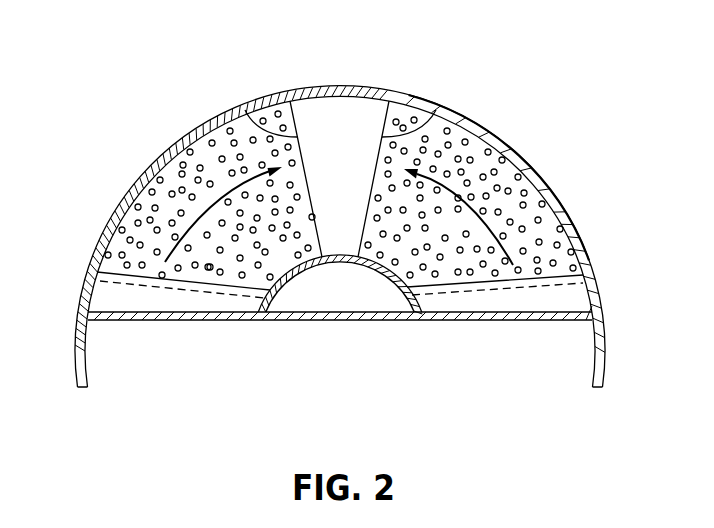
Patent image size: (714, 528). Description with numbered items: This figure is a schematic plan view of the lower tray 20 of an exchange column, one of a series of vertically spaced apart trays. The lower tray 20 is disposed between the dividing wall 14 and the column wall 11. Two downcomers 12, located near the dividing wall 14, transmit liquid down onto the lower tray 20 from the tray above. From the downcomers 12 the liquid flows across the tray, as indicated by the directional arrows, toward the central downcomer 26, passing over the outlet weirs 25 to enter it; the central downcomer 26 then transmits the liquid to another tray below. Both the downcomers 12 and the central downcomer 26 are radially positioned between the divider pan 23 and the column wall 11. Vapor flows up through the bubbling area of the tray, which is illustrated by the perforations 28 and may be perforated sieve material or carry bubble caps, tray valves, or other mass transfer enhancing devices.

The lower tray 20 is at (598, 153).
The column wall 11 is at (182, 138).
The dividing wall 14 is at (140, 322).
The divider pan 23 is at (338, 258).
The central downcomer 26 is at (338, 128).
The outlet weirs 25 is at (246, 110).
The downcomers 12 is at (175, 300).
The perforations 28 is at (560, 245).